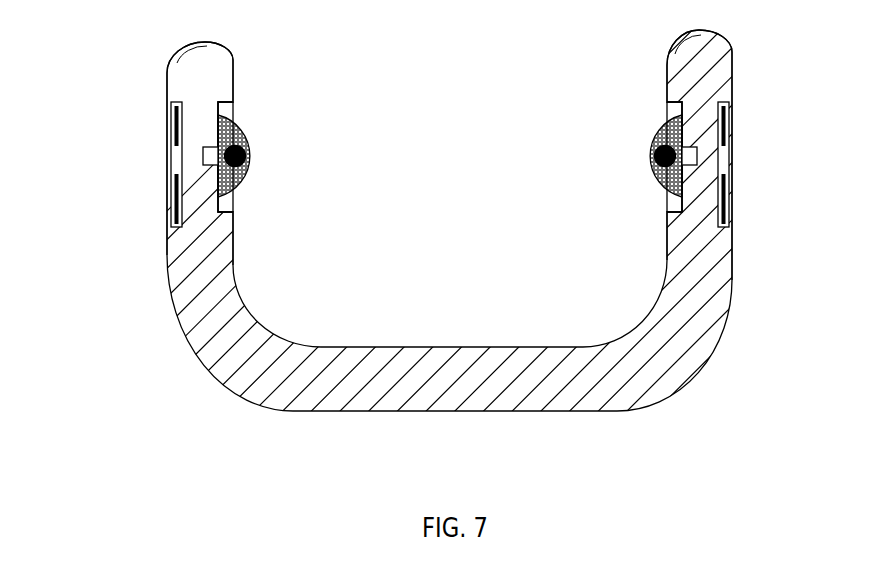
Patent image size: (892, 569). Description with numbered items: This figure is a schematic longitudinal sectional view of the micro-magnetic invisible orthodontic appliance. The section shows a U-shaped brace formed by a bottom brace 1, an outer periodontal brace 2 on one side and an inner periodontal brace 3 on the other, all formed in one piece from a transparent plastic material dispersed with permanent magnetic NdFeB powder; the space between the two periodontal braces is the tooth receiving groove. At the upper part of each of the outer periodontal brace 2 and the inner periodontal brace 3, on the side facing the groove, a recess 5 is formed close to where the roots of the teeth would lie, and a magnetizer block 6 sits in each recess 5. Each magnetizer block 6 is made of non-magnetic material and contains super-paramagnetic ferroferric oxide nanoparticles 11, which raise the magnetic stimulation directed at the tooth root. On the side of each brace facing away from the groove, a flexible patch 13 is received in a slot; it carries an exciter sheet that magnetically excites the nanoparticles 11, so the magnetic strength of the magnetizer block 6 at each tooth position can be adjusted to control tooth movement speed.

The bottom brace 1 is at (372, 380).
The outer periodontal brace 2 is at (198, 258).
The inner periodontal brace 3 is at (696, 302).
The recess 5 is at (235, 108).
The magnetizer block 6 is at (241, 184).
The super-paramagnetic ferroferric oxide nanoparticles 11 is at (247, 151).
The flexible patch 13 is at (172, 152).